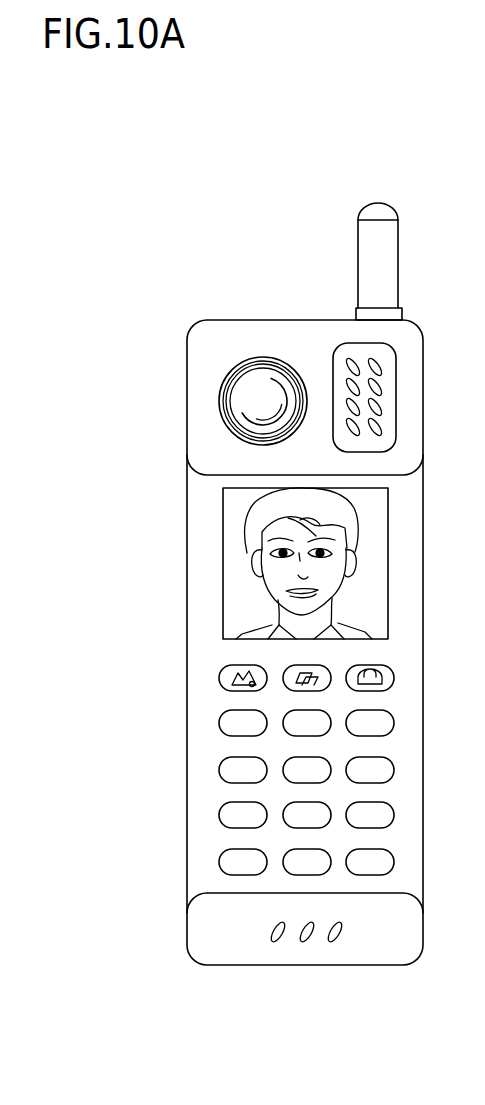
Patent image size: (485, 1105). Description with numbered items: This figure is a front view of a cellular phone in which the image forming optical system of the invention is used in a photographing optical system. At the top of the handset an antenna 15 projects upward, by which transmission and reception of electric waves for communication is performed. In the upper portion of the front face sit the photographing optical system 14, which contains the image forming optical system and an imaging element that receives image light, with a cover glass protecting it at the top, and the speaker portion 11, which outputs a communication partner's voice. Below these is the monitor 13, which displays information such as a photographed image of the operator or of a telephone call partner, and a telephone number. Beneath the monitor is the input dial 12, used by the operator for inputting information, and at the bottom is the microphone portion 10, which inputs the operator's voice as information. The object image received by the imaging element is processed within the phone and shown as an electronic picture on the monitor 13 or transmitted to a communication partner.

The microphone portion 10 is at (375, 943).
The speaker portion 11 is at (343, 353).
The input dial 12 is at (222, 778).
The monitor 13 is at (375, 528).
The photographing optical system 14 is at (232, 407).
The antenna 15 is at (372, 242).